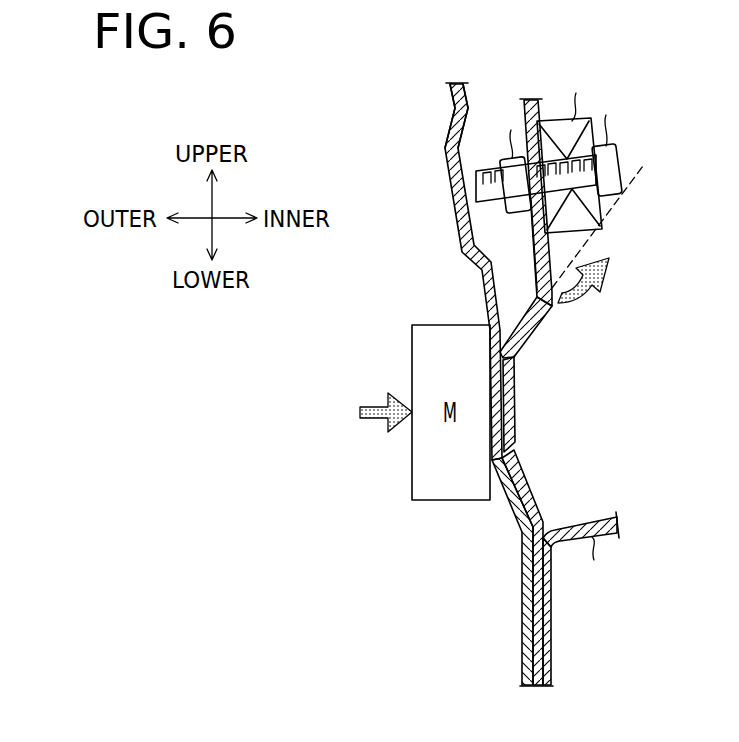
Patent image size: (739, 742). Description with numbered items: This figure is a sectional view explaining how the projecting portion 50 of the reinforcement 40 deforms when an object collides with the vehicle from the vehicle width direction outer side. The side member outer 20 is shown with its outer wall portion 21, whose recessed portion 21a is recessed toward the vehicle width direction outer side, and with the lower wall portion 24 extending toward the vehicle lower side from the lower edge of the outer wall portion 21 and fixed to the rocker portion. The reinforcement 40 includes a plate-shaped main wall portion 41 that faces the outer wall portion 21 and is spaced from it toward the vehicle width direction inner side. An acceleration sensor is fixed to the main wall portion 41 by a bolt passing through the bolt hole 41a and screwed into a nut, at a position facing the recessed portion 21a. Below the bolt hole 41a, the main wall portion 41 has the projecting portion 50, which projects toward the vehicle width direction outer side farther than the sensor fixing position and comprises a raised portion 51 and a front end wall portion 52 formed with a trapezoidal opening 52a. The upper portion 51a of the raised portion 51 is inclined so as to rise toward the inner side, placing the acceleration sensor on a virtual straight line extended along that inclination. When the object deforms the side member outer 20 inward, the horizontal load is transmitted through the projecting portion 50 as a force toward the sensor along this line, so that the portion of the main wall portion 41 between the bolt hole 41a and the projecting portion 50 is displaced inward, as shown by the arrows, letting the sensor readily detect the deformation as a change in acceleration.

The side member outer 20 is at (387, 95).
The outer wall portion 21 is at (482, 270).
The recessed portion 21a is at (450, 160).
The lower wall portion 24 is at (522, 620).
The reinforcement 40 is at (644, 301).
The main wall portion 41 is at (540, 110).
The bolt hole 41a is at (518, 208).
The projecting portion 50 is at (577, 447).
The raised portion 51 is at (522, 481).
The upper portion 51a is at (531, 333).
The front end wall portion 52 is at (512, 451).
The trapezoidal opening 52a is at (515, 385).